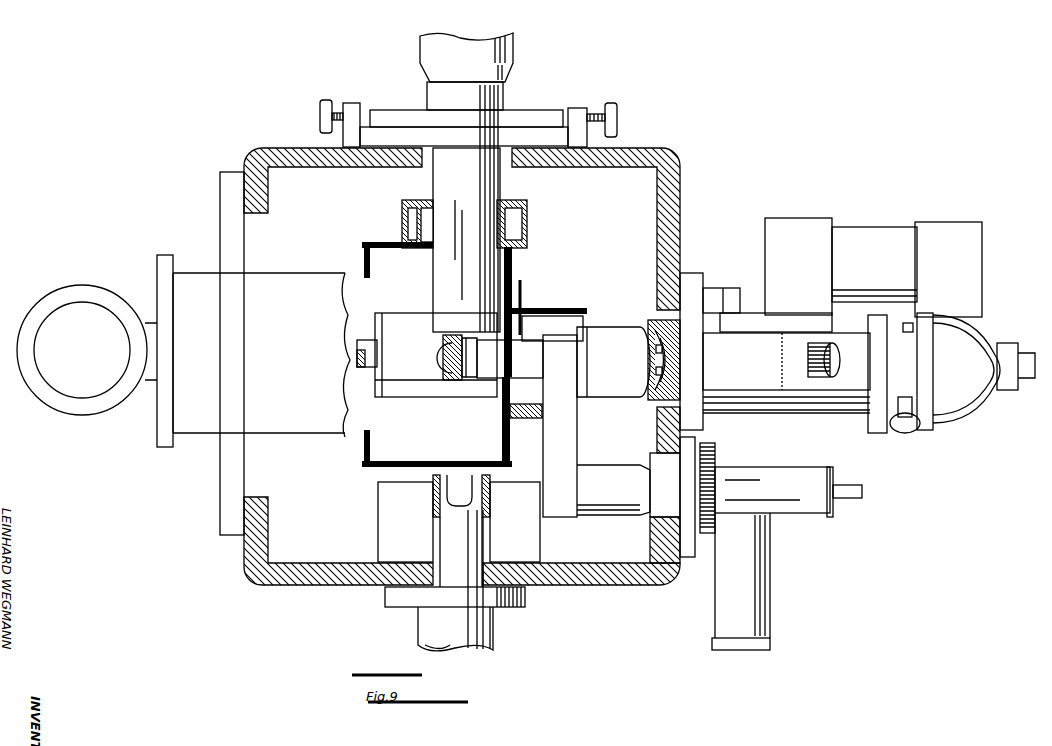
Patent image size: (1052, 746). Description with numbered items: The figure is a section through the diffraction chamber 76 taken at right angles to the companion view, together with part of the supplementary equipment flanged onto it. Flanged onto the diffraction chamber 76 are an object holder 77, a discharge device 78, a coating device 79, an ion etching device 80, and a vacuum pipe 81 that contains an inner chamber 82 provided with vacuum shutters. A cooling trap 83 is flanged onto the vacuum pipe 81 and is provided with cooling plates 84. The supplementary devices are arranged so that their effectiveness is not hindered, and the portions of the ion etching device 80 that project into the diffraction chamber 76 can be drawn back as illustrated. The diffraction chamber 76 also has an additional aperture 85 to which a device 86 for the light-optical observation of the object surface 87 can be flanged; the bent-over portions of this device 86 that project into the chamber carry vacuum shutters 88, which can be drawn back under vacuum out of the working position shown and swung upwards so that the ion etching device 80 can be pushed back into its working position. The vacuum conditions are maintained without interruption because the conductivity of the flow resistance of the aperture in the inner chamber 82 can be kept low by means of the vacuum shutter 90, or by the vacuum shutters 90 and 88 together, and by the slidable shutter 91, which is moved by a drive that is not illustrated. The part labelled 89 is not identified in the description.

The diffraction chamber 76 is at (607, 580).
The object holder 77 is at (476, 181).
The discharge device 78 is at (460, 564).
The coating device 79 is at (623, 366).
The ion etching device 80 is at (827, 400).
The vacuum pipe 81 is at (289, 358).
The inner chamber 82 is at (381, 244).
The cooling trap 83 is at (356, 348).
The cooling plates 84 is at (416, 397).
The additional aperture 85 is at (661, 523).
The device for light-optical observation 86 is at (677, 496).
The object surface 87 is at (468, 382).
The vacuum shutters 88 is at (508, 417).
The insulating plate 89 is at (521, 332).
The vacuum shutter 90 is at (556, 310).
The slidable shutter 91 is at (540, 420).